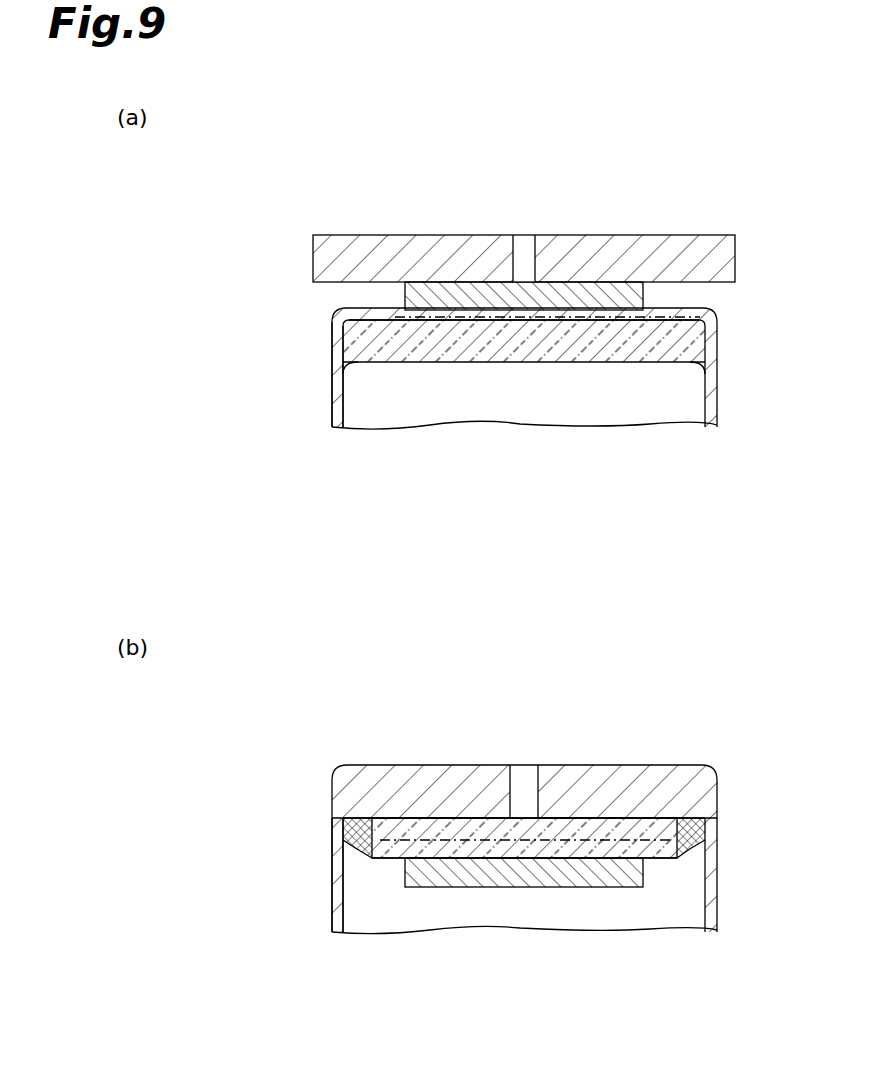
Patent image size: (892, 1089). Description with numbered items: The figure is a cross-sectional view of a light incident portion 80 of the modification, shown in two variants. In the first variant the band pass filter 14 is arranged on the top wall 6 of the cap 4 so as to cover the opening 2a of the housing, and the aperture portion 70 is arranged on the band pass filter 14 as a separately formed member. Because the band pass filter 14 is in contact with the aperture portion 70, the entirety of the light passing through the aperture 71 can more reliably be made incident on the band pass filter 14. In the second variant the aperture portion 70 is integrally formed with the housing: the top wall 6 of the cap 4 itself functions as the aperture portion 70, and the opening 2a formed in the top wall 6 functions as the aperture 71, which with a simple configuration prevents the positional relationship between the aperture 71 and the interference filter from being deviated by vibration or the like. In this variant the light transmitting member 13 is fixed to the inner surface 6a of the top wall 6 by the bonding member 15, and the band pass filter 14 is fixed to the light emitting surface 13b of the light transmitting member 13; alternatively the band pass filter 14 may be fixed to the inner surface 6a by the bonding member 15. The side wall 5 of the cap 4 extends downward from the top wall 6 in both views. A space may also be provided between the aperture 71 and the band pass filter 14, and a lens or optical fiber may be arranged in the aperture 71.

The light incident portion 80 is at (539, 548).
The aperture portion 70 is at (735, 262).
The aperture 71 is at (522, 235).
The band pass filter 14 is at (645, 299).
The light transmitting member 13 is at (582, 345).
The light emitting surface 13b is at (432, 888).
The top wall 6 is at (378, 320).
The inner surface 6a is at (347, 833).
The side wall of case 5 is at (332, 380).
The cap 4 is at (717, 378).
The opening 2a is at (520, 320).
The bonding member 15 is at (705, 820).